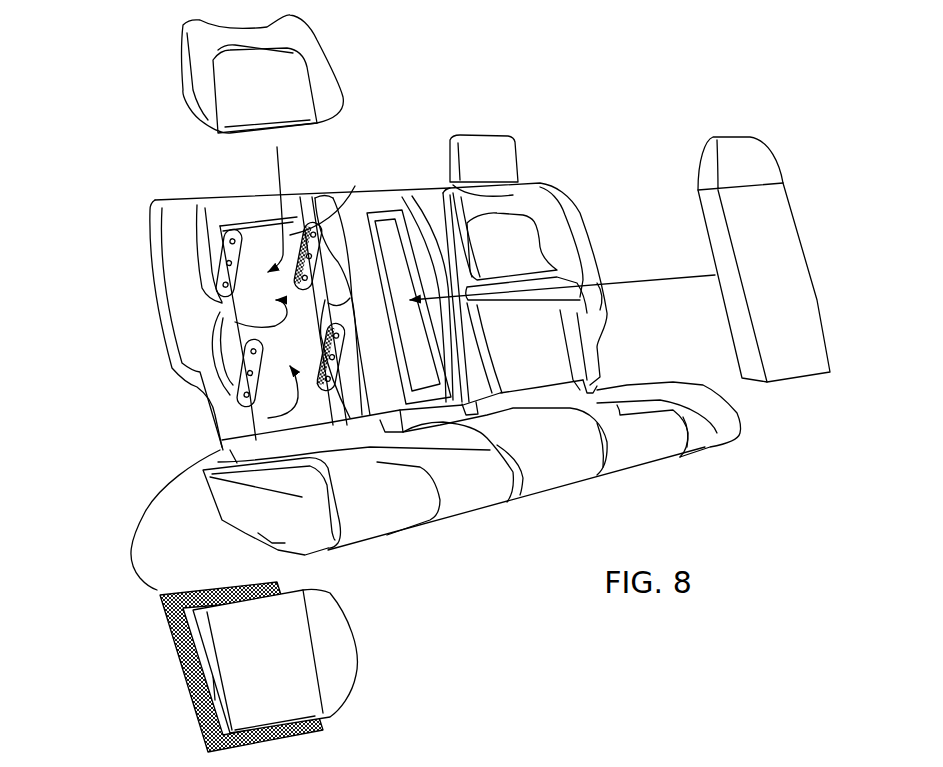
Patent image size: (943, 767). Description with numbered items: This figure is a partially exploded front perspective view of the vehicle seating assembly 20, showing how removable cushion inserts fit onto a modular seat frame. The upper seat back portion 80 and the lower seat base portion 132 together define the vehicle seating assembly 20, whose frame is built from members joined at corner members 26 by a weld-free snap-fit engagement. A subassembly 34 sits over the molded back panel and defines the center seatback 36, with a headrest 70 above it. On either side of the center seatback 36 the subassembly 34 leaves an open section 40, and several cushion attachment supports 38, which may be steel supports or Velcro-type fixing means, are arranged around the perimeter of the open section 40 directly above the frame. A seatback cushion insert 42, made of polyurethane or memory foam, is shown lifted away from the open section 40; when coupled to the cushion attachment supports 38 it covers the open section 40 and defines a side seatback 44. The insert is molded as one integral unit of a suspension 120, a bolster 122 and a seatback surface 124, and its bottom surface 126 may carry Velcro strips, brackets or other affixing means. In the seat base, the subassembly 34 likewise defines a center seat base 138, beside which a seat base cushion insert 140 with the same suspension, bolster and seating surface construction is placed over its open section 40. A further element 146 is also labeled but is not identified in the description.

The vehicle seating assembly 20 is at (100, 160).
The corner members 26 is at (557, 766).
The subassembly 34 is at (340, 198).
The center seatback 36 is at (782, 237).
The cushion attachment support 38 is at (318, 237).
The open section 40 is at (235, 322).
The seatback cushion insert 42 is at (540, 293).
The side seatback 44 is at (318, 60).
The headrest 70 is at (507, 153).
The seat back portion 80 is at (597, 283).
The suspension 120 is at (163, 607).
The bolster 122 is at (210, 702).
The seatback surface 124 is at (273, 703).
The bottom surface 126 is at (240, 135).
The seat base portion 132 is at (483, 483).
The center seat base 138 is at (570, 457).
The seat base cushion insert 140 is at (727, 440).
The floor support 146 is at (712, 760).